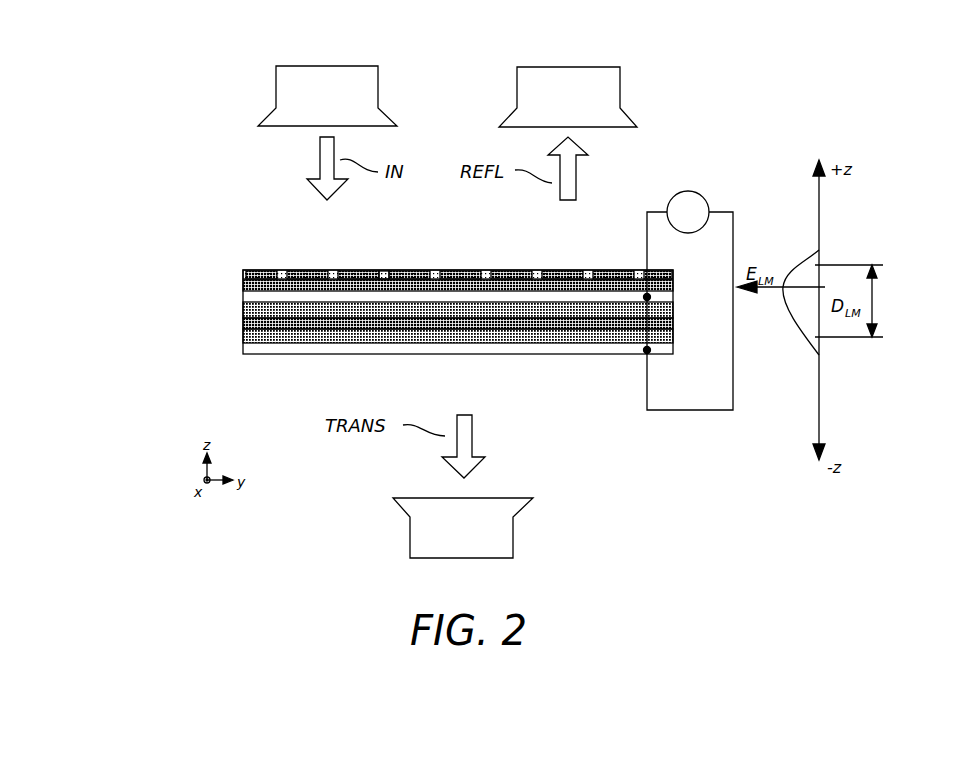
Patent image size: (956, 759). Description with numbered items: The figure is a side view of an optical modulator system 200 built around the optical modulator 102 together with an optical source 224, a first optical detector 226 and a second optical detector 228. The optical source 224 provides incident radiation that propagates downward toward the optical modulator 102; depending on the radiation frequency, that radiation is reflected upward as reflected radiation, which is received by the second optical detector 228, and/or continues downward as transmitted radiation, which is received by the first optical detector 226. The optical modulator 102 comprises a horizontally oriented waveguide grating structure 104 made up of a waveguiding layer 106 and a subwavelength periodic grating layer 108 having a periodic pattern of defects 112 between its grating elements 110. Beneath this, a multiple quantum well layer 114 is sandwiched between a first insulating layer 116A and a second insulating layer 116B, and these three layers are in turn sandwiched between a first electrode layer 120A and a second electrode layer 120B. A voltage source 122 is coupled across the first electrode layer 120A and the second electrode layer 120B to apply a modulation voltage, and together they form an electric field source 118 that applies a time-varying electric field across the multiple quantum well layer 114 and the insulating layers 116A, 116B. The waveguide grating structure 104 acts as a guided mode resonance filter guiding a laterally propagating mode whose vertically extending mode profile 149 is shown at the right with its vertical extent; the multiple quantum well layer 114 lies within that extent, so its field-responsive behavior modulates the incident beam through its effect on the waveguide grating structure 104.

The optical modulator system 200 is at (183, 66).
The optical source 224 is at (380, 80).
The second optical detector 228 is at (622, 82).
The first optical detector 226 is at (410, 536).
The voltage source 122 is at (668, 196).
The electric field source 118 is at (691, 338).
The first electrode layer 120A is at (673, 297).
The second electrode layer 120B is at (680, 373).
The optical modulator 102 is at (353, 303).
The waveguide grating structure 104 is at (386, 263).
The subwavelength periodic grating layer 108 is at (421, 254).
The grating element 110 is at (398, 270).
The defects 112 is at (382, 270).
The waveguiding layer 106 is at (243, 287).
The first insulating layer 116A is at (243, 309).
The multiple quantum well layer 114 is at (243, 323).
The second insulating layer 116B is at (406, 357).
The mode profile 149 is at (790, 268).